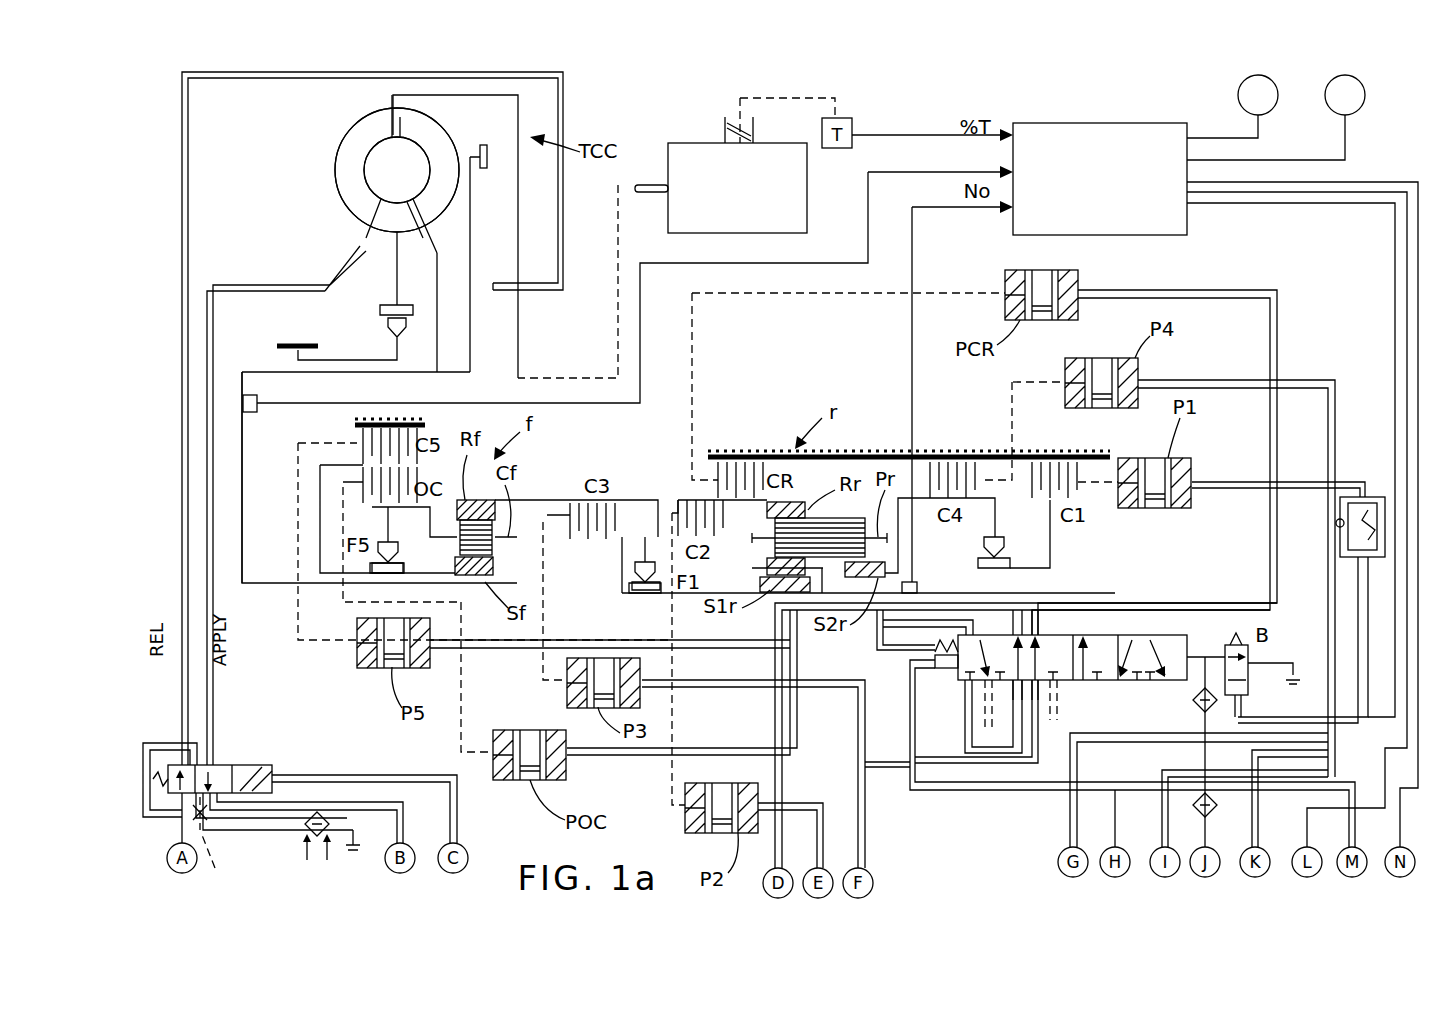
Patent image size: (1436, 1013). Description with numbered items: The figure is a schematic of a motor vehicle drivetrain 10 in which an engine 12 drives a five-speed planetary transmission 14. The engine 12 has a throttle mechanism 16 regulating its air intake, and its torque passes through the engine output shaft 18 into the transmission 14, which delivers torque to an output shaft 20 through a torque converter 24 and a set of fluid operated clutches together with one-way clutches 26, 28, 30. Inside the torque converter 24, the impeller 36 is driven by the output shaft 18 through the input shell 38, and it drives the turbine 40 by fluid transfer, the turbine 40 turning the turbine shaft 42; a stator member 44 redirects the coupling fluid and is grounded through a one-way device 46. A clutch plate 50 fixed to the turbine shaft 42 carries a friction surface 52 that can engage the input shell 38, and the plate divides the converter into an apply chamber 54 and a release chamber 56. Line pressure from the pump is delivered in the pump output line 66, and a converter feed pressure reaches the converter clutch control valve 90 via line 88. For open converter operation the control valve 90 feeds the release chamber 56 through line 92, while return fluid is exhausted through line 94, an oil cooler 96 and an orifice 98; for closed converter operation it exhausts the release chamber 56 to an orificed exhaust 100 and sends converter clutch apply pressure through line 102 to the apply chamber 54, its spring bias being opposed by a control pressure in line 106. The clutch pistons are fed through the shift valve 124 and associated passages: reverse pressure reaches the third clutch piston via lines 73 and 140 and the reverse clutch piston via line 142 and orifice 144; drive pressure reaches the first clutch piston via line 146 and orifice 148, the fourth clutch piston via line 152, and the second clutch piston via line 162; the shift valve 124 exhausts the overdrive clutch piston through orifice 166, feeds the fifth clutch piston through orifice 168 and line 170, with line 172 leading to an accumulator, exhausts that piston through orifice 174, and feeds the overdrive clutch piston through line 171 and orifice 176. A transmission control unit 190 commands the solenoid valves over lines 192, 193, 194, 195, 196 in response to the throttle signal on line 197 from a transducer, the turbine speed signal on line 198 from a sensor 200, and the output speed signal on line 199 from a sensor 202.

The motor vehicle drivetrain 10 is at (884, 110).
The engine 12 is at (668, 160).
The planetary transmission 14 is at (702, 428).
The throttle mechanism 16 is at (727, 130).
The engine output shaft 18 is at (648, 192).
The output shaft 20 is at (1110, 590).
The torque converter 24 is at (290, 158).
The one-way clutch 26 is at (380, 580).
The one-way clutch 28 is at (640, 593).
The one-way clutch 30 is at (980, 562).
The impeller 36 is at (342, 187).
The input shell 38 is at (520, 118).
The turbine 40 is at (433, 143).
The turbine shaft 42 is at (257, 368).
The stator member 44 is at (367, 220).
The one-way device 46 is at (385, 327).
The clutch plate 50 is at (465, 200).
The friction surface 52 is at (492, 152).
The apply chamber 54 is at (450, 255).
The release chamber 56 is at (505, 220).
The pump output line 66 is at (1257, 835).
The line 73 is at (870, 830).
The converter feed line 88 is at (170, 843).
The TCC Control Valve 90 is at (222, 765).
The line 92 is at (180, 603).
The line 94 is at (213, 580).
The oil cooler 96 is at (308, 835).
The orifice 98 is at (355, 835).
The orificed exhaust 100 is at (220, 844).
The line 102 is at (350, 803).
The line 106 is at (460, 817).
The Shift Valve 124 is at (1180, 635).
The line 140 is at (845, 690).
The line 142 is at (962, 770).
The orifice 144 is at (1045, 688).
The line 146 is at (1070, 830).
The orifice 148 is at (1372, 497).
The line 152 is at (1162, 835).
The line 162 is at (803, 807).
The orifice 166 is at (1020, 690).
The orifice 168 is at (985, 690).
The line 170 is at (868, 650).
The line 171 is at (788, 622).
The line 172 is at (775, 695).
The orifice 174 is at (980, 700).
The orifice 176 is at (1030, 700).
The Transmission Control Unit 190 is at (1137, 237).
The line 192 is at (1343, 182).
The line 193 is at (1328, 205).
The line 194 is at (1297, 195).
The line 195 is at (1295, 158).
The line 196 is at (1210, 138).
The line 197 is at (933, 132).
The line 198 is at (866, 195).
The line 199 is at (930, 208).
The sensor 200 is at (255, 412).
The sensor 202 is at (920, 585).